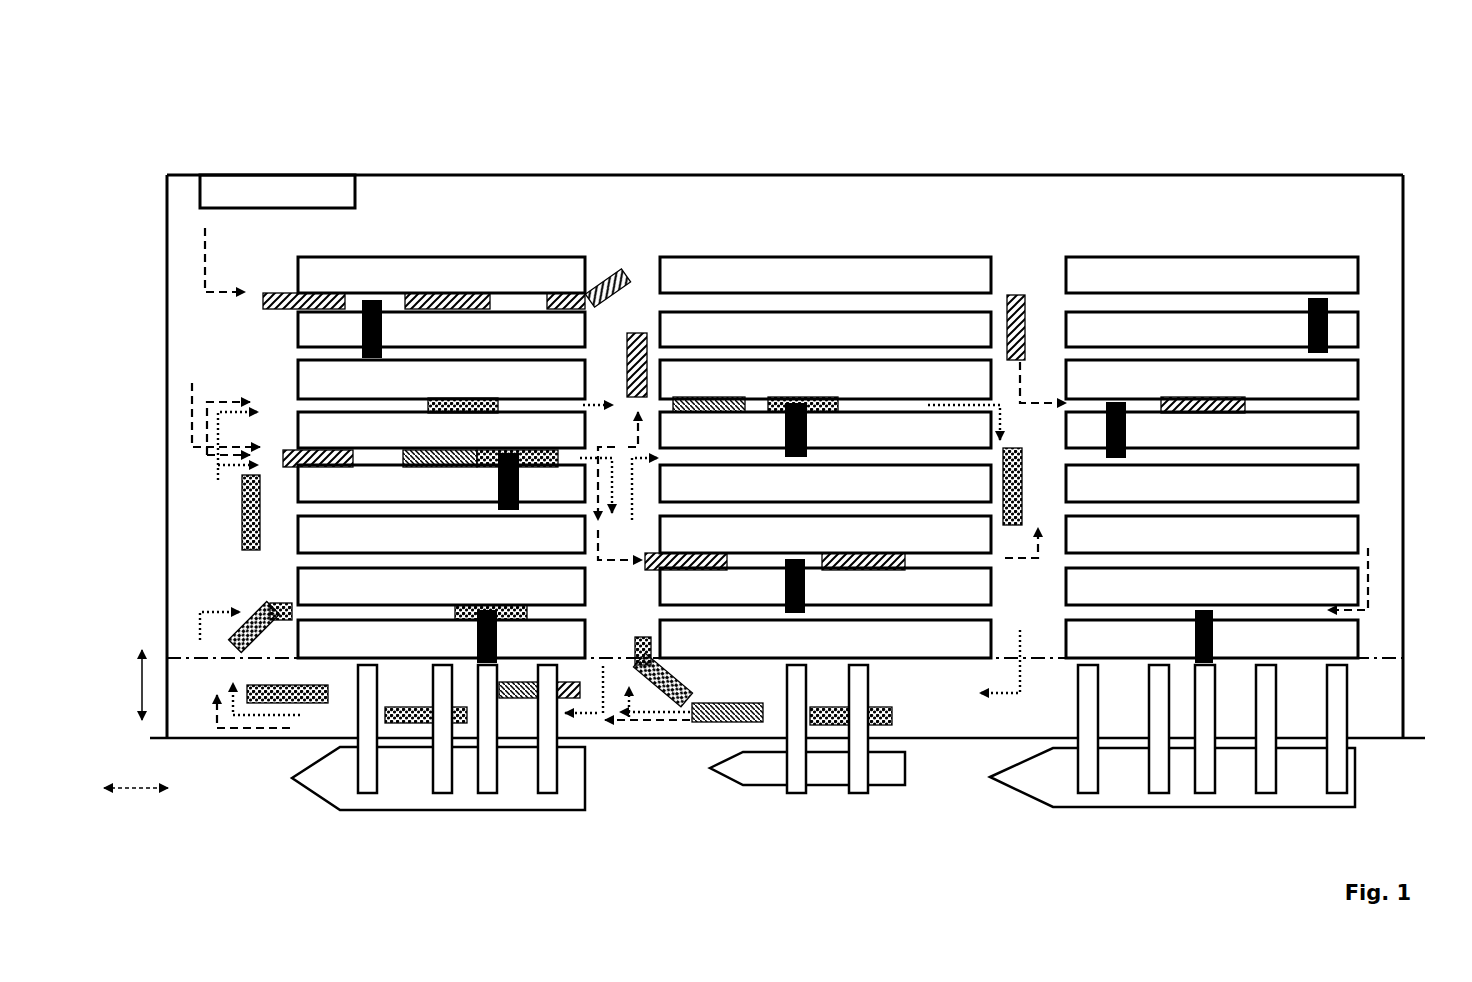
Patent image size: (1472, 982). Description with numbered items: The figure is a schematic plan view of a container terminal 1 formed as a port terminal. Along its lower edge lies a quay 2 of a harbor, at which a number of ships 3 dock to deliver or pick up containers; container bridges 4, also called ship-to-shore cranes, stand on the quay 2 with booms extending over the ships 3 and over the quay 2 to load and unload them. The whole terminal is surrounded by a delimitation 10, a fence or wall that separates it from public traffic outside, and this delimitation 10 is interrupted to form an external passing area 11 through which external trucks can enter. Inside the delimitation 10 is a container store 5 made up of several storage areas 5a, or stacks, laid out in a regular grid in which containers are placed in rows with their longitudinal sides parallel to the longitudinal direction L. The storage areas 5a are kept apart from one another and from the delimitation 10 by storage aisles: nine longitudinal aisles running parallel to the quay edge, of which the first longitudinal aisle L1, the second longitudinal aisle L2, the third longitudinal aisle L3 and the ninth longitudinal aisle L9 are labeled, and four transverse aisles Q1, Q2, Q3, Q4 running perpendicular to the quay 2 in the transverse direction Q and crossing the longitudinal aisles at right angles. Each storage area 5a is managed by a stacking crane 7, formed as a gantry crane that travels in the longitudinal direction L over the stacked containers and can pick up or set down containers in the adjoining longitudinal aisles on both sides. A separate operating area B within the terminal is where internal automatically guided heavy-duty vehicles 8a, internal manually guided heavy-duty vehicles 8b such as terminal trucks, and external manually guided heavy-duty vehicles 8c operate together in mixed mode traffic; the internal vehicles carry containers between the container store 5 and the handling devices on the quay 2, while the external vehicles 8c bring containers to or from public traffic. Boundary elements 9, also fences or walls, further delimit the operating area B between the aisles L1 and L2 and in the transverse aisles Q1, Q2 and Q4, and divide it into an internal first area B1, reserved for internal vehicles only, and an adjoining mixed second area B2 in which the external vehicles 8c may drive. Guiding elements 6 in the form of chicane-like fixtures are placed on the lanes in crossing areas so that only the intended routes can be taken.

The container terminal 1 is at (1393, 152).
The quay 2 is at (938, 753).
The ship 3 is at (400, 777).
The container bridge 4 is at (368, 797).
The container store 5 is at (1373, 280).
The storage area 5a is at (882, 283).
The guiding element 6 is at (693, 302).
The stacking crane 7 is at (352, 332).
The internal automatically guided heavy-duty vehicle 8a is at (238, 525).
The internal manually guided heavy-duty vehicle 8b is at (708, 725).
The external manually guided heavy-duty vehicle 8c is at (425, 293).
The boundary element 9 is at (1193, 152).
The delimitation 10 is at (380, 173).
The external passing area 11 is at (289, 195).
The separate operating area B is at (619, 482).
The first area B1 is at (195, 690).
The second area B2 is at (155, 217).
The longitudinal direction L is at (136, 773).
The first longitudinal aisle L1 is at (495, 207).
The second longitudinal aisle L2 is at (1337, 303).
The third longitudinal aisle L3 is at (1338, 353).
The ninth longitudinal aisle L9 is at (897, 692).
The transverse direction Q is at (127, 685).
The first transverse aisle Q1 is at (250, 583).
The second transverse aisle Q2 is at (617, 603).
The third transverse aisle Q3 is at (1057, 602).
The fourth transverse aisle Q4 is at (1380, 617).